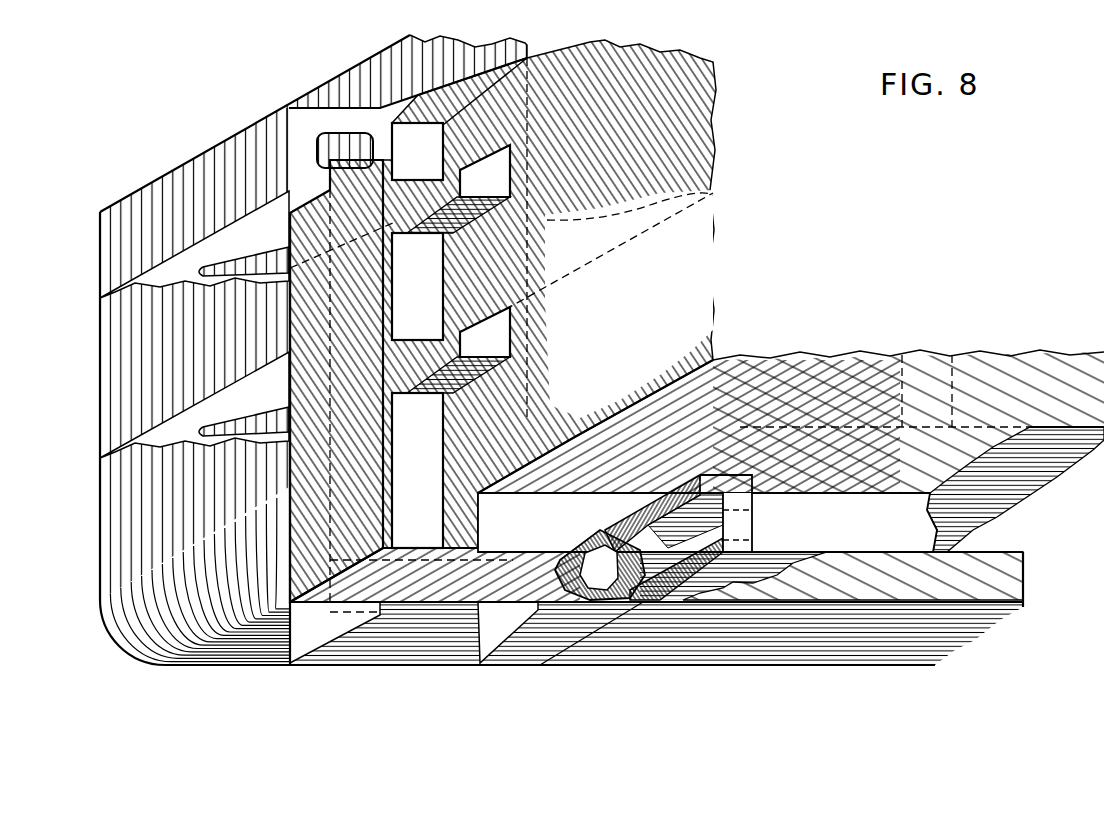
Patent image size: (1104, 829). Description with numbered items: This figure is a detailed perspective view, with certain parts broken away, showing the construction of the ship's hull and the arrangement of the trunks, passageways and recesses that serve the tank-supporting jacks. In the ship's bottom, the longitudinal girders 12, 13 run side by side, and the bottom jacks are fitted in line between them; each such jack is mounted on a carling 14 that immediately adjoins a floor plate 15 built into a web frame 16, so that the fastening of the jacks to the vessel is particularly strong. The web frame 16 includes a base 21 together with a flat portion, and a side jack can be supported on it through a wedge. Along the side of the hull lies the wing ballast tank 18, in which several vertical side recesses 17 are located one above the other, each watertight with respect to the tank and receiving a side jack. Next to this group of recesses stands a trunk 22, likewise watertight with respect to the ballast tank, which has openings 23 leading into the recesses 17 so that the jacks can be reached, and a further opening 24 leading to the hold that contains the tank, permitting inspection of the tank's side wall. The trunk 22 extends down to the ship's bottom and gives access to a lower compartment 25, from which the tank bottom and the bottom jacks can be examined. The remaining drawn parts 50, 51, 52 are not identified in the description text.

The longitudinal girder 12 is at (565, 555).
The longitudinal girder 13 is at (727, 560).
The carling 14 is at (695, 525).
The floor plate 15 is at (885, 515).
The web frame 16 is at (308, 127).
The side recess 17 is at (488, 182).
The wing ballast tank 18 is at (178, 597).
The base 21 is at (178, 273).
The trunk 22 is at (373, 162).
The opening 23 is at (480, 205).
The opening 24 is at (417, 150).
The lower compartment 25 is at (443, 518).
The bracket 50 is at (677, 142).
The channel end 51 is at (607, 553).
The sheet 52 is at (1090, 407).